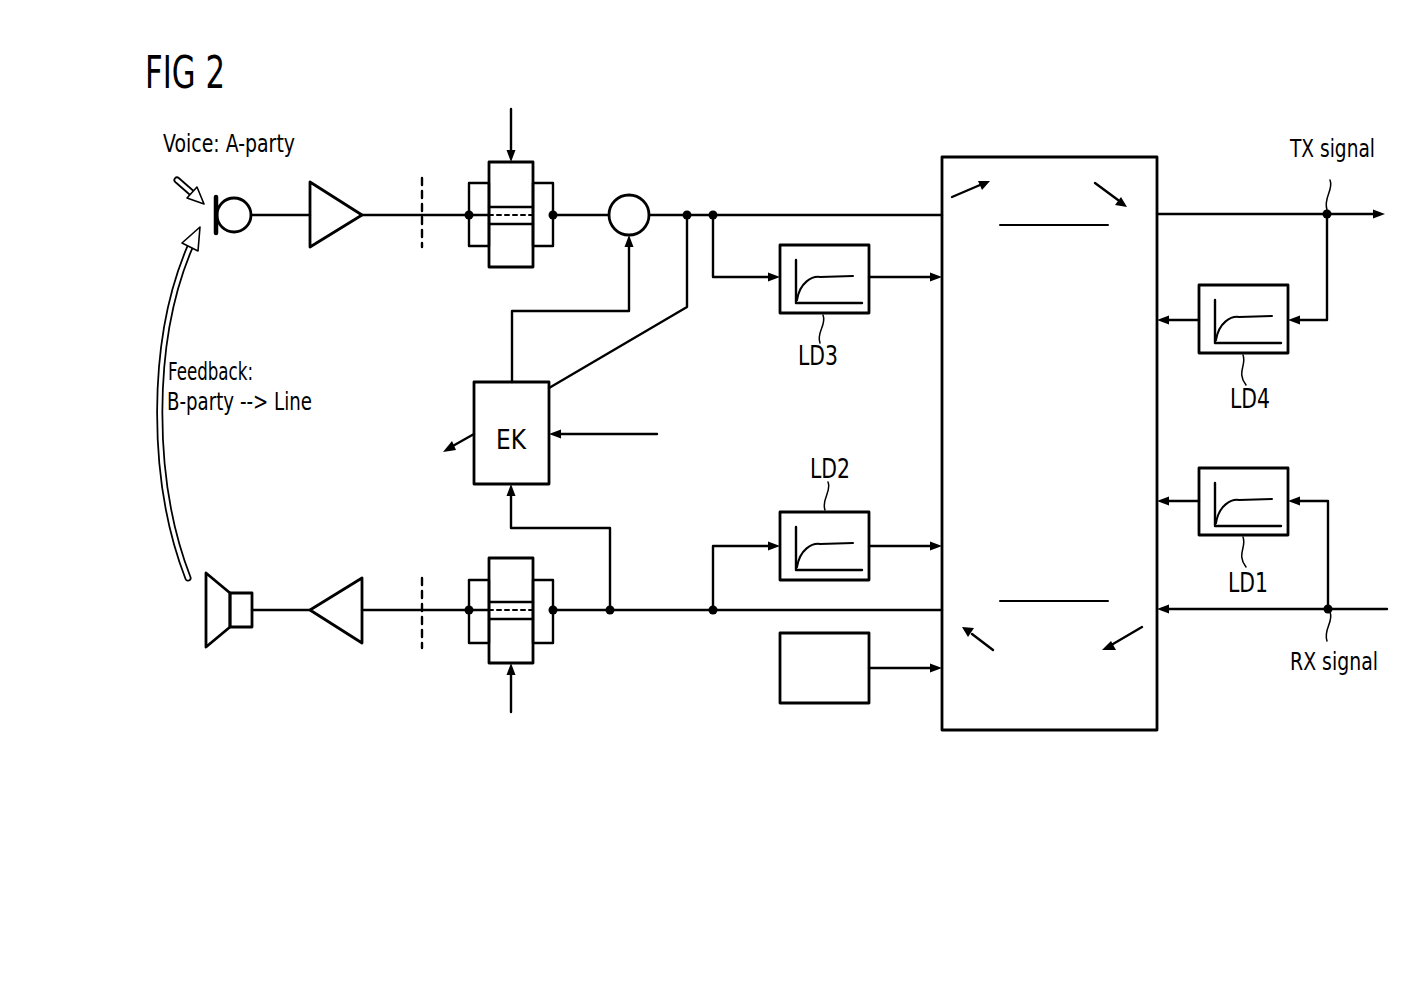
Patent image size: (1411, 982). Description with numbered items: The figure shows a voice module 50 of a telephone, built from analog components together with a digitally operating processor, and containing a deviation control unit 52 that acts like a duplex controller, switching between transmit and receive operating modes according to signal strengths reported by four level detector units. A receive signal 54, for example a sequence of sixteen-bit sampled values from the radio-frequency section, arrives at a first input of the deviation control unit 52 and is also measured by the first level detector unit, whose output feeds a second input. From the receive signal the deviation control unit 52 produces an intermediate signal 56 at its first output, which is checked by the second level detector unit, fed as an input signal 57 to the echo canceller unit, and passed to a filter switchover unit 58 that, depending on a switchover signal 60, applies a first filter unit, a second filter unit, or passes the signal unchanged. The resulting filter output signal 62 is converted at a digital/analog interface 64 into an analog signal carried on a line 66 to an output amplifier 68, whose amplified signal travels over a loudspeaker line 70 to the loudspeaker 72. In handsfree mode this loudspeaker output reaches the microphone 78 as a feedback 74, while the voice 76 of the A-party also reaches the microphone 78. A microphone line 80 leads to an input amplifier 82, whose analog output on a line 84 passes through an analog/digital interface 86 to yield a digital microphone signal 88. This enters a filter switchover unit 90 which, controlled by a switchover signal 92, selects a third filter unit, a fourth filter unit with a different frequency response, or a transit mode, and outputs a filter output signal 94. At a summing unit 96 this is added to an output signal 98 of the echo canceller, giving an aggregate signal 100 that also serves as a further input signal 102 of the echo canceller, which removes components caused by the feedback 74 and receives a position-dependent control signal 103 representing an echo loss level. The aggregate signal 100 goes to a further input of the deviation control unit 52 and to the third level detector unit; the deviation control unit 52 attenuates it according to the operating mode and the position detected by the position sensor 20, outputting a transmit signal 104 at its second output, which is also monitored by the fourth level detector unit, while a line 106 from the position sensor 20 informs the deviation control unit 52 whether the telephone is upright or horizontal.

The position sensor 20 is at (826, 705).
The voice module 50 is at (412, 697).
The deviation control unit 52 is at (1046, 731).
The receive signal 54 is at (1228, 612).
The intermediate signal 56 is at (753, 613).
The input signal 57 is at (610, 560).
The filter switchover unit 58 is at (500, 664).
The switchover signal 60 is at (511, 703).
The filter output signal 62 is at (453, 607).
The digital/analog interface 64 is at (418, 630).
The line 66 is at (381, 607).
The output amplifier 68 is at (333, 598).
The loudspeaker line 70 is at (275, 607).
The loudspeaker 72 is at (240, 629).
The feedback 74 is at (168, 313).
The voice of the A-party 76 is at (185, 197).
The microphone 78 is at (233, 233).
The microphone line 80 is at (276, 218).
The input amplifier 82 is at (334, 236).
The line 84 is at (384, 218).
The analog/digital interface 86 is at (418, 194).
The microphone signal 88 is at (456, 218).
The filter switchover unit 90 is at (503, 159).
The switchover signal 92 is at (511, 117).
The filter output signal 94 is at (590, 218).
The summing unit 96 is at (632, 193).
The output signal 98 is at (512, 343).
The aggregate signal 100 is at (742, 213).
The further input signal 102 is at (655, 325).
The control signal 103 is at (617, 433).
The transmit signal 104 is at (1225, 211).
The line 106 is at (898, 672).